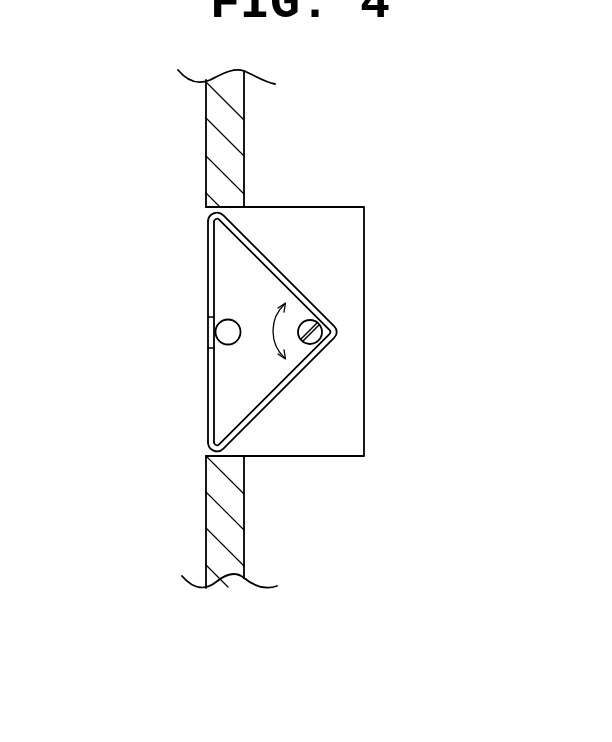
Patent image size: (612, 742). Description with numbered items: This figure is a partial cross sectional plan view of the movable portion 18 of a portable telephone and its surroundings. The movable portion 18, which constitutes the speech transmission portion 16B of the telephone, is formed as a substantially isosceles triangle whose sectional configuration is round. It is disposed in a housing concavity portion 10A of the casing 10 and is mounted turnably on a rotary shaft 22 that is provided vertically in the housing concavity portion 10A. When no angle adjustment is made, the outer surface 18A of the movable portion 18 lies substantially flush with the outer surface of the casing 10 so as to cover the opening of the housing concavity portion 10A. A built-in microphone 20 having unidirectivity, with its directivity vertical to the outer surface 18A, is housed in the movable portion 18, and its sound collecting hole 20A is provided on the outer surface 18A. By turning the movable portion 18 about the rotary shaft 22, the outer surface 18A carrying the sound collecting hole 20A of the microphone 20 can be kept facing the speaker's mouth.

The casing 10 is at (228, 162).
The housing concavity portion 10A is at (312, 237).
The movable portion 18 is at (320, 300).
The outer surface 18A is at (207, 258).
The sound collecting hole 20A is at (208, 322).
The microphone 20 is at (228, 340).
The rotary shaft 22 is at (320, 338).
The speech transmission portion 16B is at (196, 454).